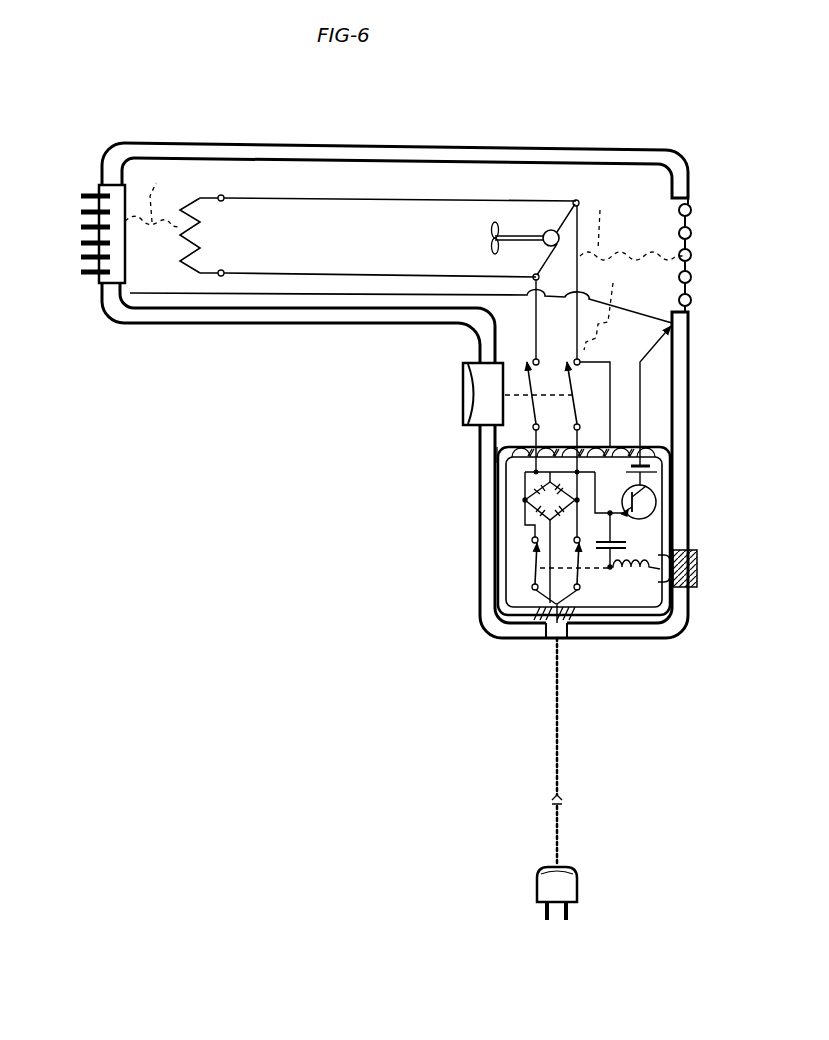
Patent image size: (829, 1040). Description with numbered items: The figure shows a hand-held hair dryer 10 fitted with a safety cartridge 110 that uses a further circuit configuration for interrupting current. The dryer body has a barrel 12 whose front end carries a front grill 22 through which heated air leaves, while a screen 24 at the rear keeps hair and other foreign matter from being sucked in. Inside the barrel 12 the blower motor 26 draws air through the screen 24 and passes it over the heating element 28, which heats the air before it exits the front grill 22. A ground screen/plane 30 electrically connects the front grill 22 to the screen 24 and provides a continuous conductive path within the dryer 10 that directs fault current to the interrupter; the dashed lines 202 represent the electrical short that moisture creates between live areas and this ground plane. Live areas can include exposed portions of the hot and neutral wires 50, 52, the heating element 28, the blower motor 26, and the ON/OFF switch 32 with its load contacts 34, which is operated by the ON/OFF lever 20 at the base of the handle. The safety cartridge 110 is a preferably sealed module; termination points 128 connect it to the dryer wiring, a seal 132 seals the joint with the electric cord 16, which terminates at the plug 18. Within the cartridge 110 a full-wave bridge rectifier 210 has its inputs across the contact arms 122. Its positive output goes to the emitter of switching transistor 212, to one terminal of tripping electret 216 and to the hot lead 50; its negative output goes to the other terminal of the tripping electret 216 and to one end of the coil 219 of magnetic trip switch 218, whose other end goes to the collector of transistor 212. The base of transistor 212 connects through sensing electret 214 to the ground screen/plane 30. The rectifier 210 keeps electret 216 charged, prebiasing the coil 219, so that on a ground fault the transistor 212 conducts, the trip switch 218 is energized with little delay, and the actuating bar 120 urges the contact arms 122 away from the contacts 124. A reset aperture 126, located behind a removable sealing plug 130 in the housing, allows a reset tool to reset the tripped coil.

The hair dryer 10 is at (268, 392).
The barrel 12 is at (386, 144).
The electric cord 16 is at (559, 764).
The plug 18 is at (578, 888).
The ON/OFF lever 20 is at (466, 386).
The front grill 22 is at (90, 193).
The screen 24 is at (691, 209).
The blower motor 26 is at (492, 246).
The heating element 28 is at (187, 218).
The ground screen/plane 30 is at (170, 293).
The ON/OFF switch 32 is at (581, 366).
The load contacts 34 is at (578, 412).
The hot wire 50 is at (575, 334).
The neutral wire 52 is at (533, 334).
The safety cartridge 110 is at (669, 446).
The actuating bar 120 is at (588, 604).
The contact arms 122 is at (574, 577).
The contacts 124 is at (532, 540).
The reset aperture 126 is at (666, 581).
The termination points 128 is at (497, 448).
The sealing plug 130 is at (692, 552).
The seal 132 is at (535, 626).
The electrical short 202 is at (405, 258).
The full-wave bridge rectifier 210 is at (523, 500).
The switching transistor 212 is at (657, 500).
The sensing electret 214 is at (658, 470).
The tripping electret 216 is at (599, 556).
The magnetic trip switch 218 is at (624, 581).
The coil 219 is at (648, 592).